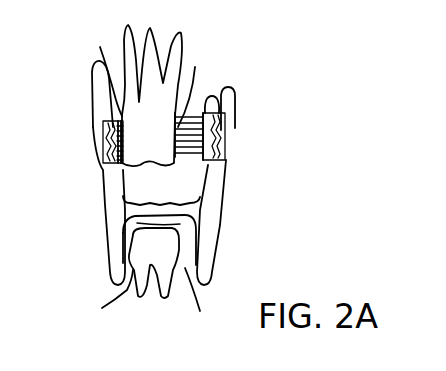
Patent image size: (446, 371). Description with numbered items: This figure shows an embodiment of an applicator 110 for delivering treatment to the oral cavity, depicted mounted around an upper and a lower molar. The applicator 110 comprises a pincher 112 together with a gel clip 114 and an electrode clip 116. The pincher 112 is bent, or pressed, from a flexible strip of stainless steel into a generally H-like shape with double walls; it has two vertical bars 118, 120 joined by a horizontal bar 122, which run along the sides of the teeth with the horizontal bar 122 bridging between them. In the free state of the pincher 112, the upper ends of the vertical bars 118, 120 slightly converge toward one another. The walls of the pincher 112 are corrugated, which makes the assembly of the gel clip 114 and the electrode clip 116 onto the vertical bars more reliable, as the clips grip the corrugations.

The applicator 110 is at (257, 59).
The pincher 112 is at (100, 283).
The gel clip 114 is at (104, 163).
The electrode clip 116 is at (236, 98).
The vertical bar 118 is at (105, 204).
The vertical bar 120 is at (223, 197).
The horizontal bar 122 is at (163, 200).